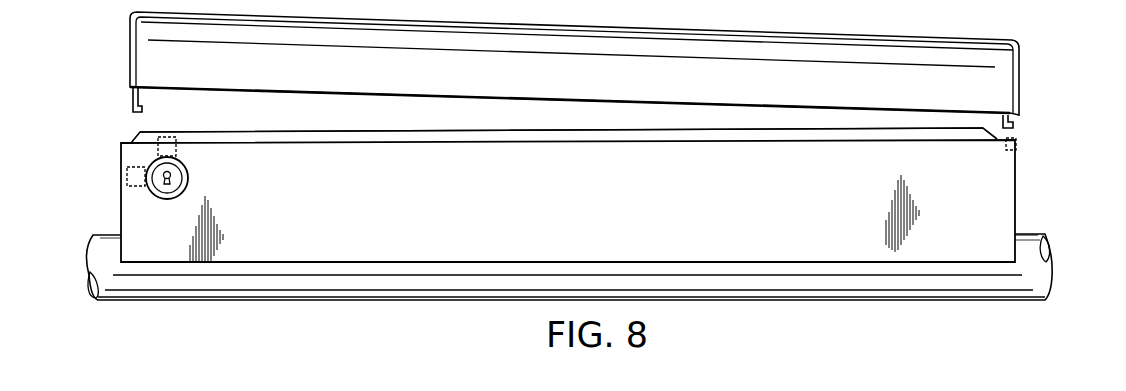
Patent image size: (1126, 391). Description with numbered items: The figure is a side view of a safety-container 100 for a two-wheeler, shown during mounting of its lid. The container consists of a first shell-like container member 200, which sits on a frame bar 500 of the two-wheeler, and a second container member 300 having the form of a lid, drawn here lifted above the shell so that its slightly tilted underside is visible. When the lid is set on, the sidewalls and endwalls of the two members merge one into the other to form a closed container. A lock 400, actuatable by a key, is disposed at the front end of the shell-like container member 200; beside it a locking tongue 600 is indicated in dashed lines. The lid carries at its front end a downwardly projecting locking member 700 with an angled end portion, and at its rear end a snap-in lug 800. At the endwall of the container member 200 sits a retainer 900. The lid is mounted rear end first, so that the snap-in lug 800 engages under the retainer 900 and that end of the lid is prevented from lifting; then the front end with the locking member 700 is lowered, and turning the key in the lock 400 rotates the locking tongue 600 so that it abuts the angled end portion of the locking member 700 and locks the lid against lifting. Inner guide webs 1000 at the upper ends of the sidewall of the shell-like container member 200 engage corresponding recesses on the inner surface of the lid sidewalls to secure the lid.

The case assembly 100 is at (1042, 80).
The shell-like container member 200 is at (1000, 212).
The second container member 300 is at (880, 50).
The lock 400 is at (190, 178).
The frame bar 500 is at (1002, 280).
The locking tongue 600 is at (127, 178).
The locking member 700 is at (128, 103).
The snap-in lug 800 is at (1017, 122).
The retainer 900 is at (1017, 148).
The inner guide webs 1000 is at (342, 128).